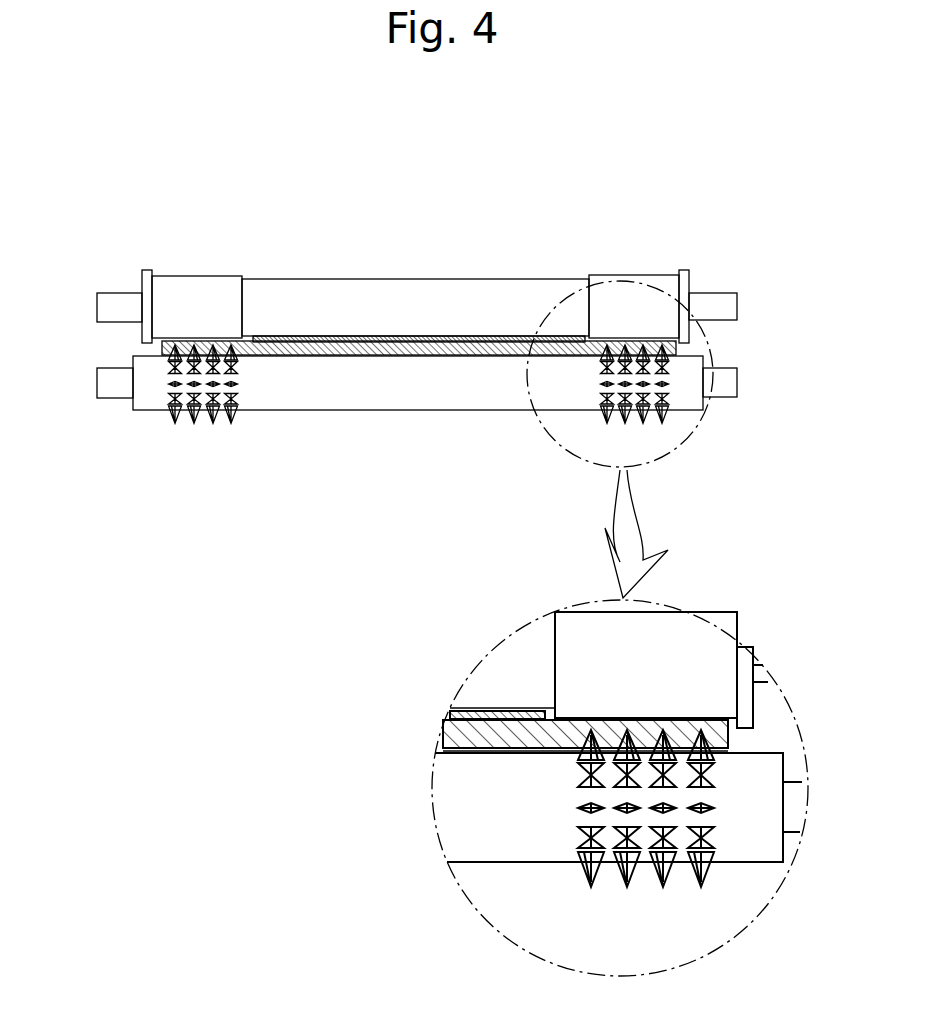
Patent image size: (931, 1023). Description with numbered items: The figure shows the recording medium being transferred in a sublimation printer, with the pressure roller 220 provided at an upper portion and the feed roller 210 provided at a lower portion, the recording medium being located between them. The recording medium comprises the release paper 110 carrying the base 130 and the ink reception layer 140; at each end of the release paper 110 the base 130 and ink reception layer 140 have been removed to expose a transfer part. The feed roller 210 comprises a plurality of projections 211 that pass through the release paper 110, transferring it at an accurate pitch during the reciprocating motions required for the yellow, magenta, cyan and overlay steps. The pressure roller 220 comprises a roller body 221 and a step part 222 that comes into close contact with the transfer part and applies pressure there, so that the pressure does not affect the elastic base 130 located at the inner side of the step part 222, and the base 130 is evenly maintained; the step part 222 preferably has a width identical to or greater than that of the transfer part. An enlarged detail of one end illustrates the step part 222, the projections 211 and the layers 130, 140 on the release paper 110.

The release paper 110 is at (416, 357).
The base 130 is at (445, 333).
The ink reception layer 140 is at (419, 527).
The feed roller 210 is at (355, 395).
The projections 211 is at (175, 417).
The pressure roller 220 is at (290, 194).
The pressure roller body 221 is at (282, 288).
The step part 222 is at (203, 283).